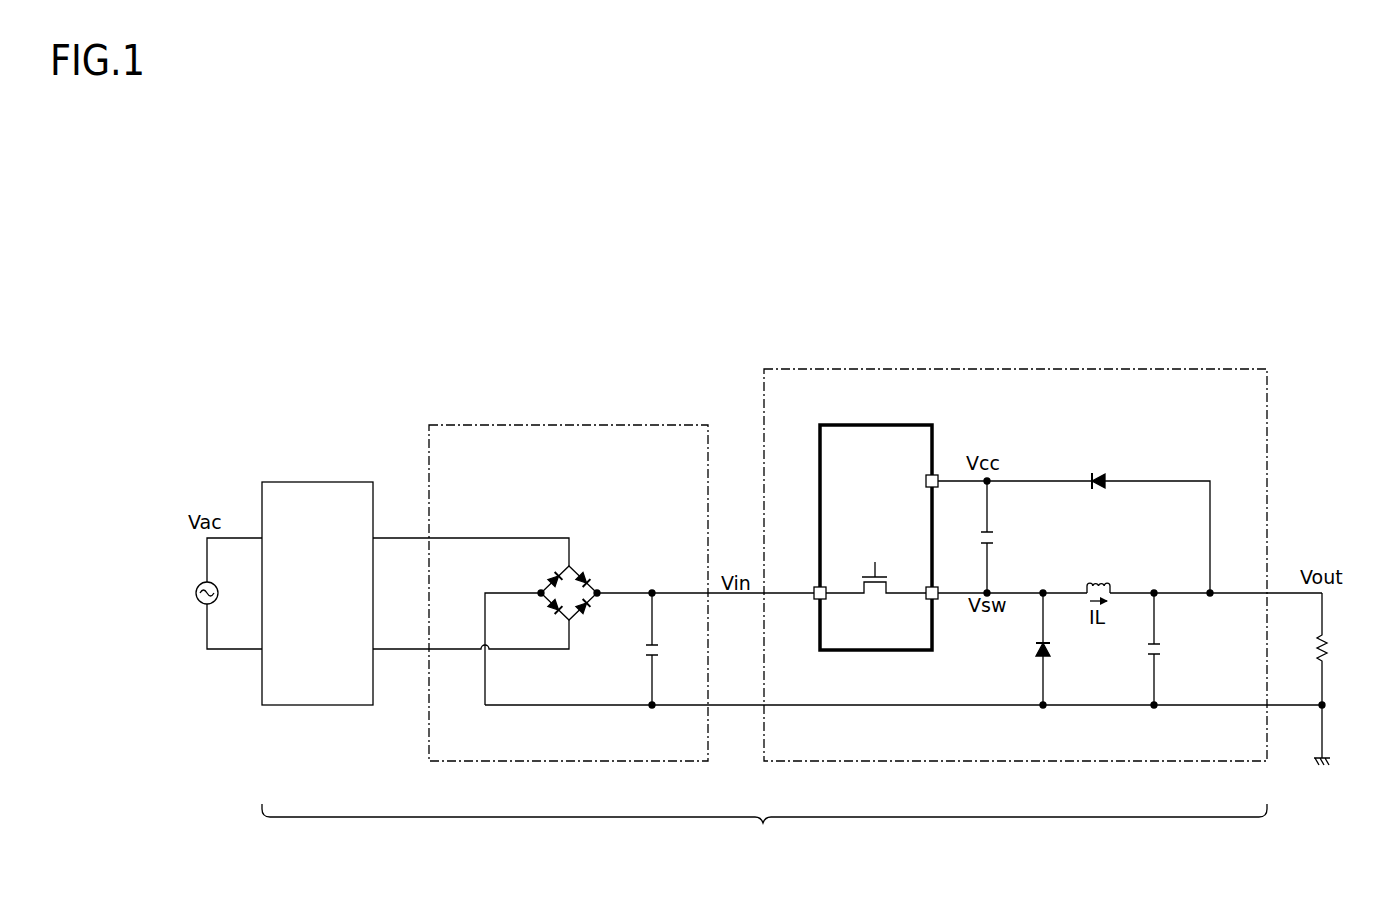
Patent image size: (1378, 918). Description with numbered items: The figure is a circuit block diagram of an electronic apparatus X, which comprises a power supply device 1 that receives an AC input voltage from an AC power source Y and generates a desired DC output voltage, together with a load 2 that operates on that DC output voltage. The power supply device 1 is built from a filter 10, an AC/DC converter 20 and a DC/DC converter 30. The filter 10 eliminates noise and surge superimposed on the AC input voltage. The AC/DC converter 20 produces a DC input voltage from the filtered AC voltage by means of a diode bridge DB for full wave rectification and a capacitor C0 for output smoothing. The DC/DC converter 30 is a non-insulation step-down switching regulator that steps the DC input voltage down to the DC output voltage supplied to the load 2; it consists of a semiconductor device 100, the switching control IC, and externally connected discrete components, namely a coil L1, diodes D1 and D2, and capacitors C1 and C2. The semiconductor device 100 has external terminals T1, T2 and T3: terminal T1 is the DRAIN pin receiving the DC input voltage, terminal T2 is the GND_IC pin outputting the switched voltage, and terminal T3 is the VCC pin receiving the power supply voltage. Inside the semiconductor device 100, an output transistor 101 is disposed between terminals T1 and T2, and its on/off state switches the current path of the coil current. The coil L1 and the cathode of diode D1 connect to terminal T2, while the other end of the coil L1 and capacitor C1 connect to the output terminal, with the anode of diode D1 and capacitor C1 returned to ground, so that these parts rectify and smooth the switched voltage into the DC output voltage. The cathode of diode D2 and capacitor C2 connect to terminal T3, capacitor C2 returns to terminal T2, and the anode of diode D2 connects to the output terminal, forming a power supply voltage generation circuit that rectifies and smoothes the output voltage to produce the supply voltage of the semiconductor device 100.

The electronic apparatus X is at (262, 313).
The AC power source Y is at (195, 593).
The power supply device 1 is at (764, 829).
The load 2 is at (1329, 651).
The filter 10 is at (318, 482).
The AC/DC converter 20 is at (569, 425).
The DC/DC converter 30 is at (1015, 369).
The semiconductor device 100 is at (875, 425).
The output transistor 101 is at (875, 600).
The external terminal T1 is at (815, 588).
The external terminal T2 is at (937, 588).
The external terminal T3 is at (938, 484).
The diode bridge DB is at (590, 574).
The capacitor C0 is at (660, 650).
The capacitor C1 is at (1162, 650).
The capacitor C2 is at (995, 538).
The diode D1 is at (1051, 650).
The diode D2 is at (1097, 474).
The coil L1 is at (1098, 581).